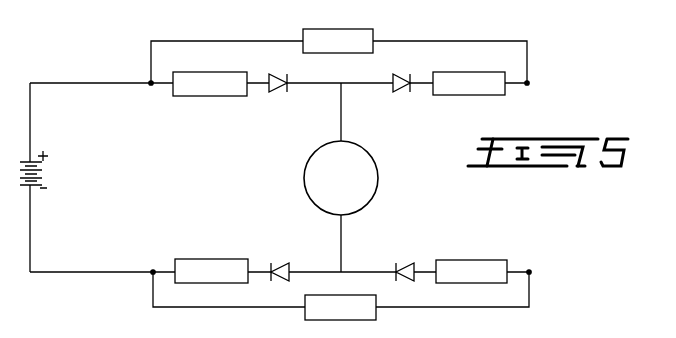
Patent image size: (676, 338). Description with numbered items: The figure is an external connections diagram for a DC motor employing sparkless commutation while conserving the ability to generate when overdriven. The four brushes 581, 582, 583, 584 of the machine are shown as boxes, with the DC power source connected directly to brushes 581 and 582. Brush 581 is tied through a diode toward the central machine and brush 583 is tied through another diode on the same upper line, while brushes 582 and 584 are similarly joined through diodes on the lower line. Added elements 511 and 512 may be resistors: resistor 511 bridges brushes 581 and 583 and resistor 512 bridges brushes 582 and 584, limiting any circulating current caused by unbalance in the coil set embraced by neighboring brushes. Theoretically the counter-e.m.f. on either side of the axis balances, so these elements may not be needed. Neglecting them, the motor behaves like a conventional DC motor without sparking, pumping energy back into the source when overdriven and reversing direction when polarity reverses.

The resistor 511 is at (338, 41).
The resistor 512 is at (340, 307).
The brush 581 is at (210, 84).
The brush 582 is at (211, 271).
The brush 583 is at (469, 83).
The brush 584 is at (471, 271).